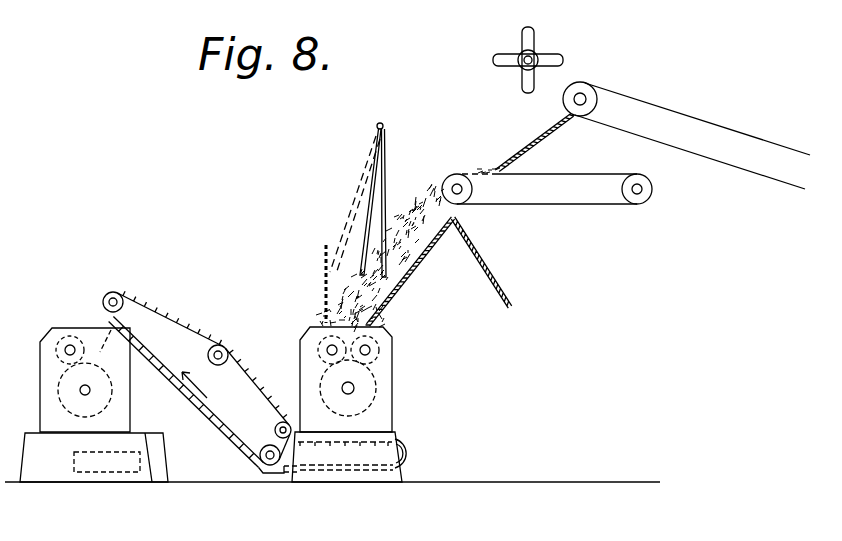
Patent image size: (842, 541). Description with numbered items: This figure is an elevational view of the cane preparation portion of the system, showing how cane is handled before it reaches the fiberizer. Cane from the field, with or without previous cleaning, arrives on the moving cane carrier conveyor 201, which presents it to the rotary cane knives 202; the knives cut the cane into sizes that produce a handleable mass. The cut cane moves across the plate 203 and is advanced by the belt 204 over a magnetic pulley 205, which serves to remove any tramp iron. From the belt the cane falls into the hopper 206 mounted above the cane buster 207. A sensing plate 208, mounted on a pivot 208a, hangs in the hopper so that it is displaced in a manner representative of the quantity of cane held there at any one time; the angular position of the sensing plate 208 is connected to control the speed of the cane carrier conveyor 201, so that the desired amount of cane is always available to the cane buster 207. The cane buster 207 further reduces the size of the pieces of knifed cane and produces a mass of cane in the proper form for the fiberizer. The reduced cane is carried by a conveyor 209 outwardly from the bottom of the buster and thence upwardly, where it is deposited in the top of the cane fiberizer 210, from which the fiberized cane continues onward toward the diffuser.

The cane carrier conveyor 201 is at (688, 113).
The rotary cane knives 202 is at (532, 45).
The plate 203 is at (540, 142).
The belt 204 is at (572, 205).
The magnetic pulley 205 is at (460, 174).
The hopper 206 is at (367, 297).
The cane buster 207 is at (387, 397).
The sensing plate 208 is at (381, 196).
The pivot 208a is at (377, 126).
The conveyor 209 is at (208, 420).
The cane fiberizer 210 is at (52, 328).